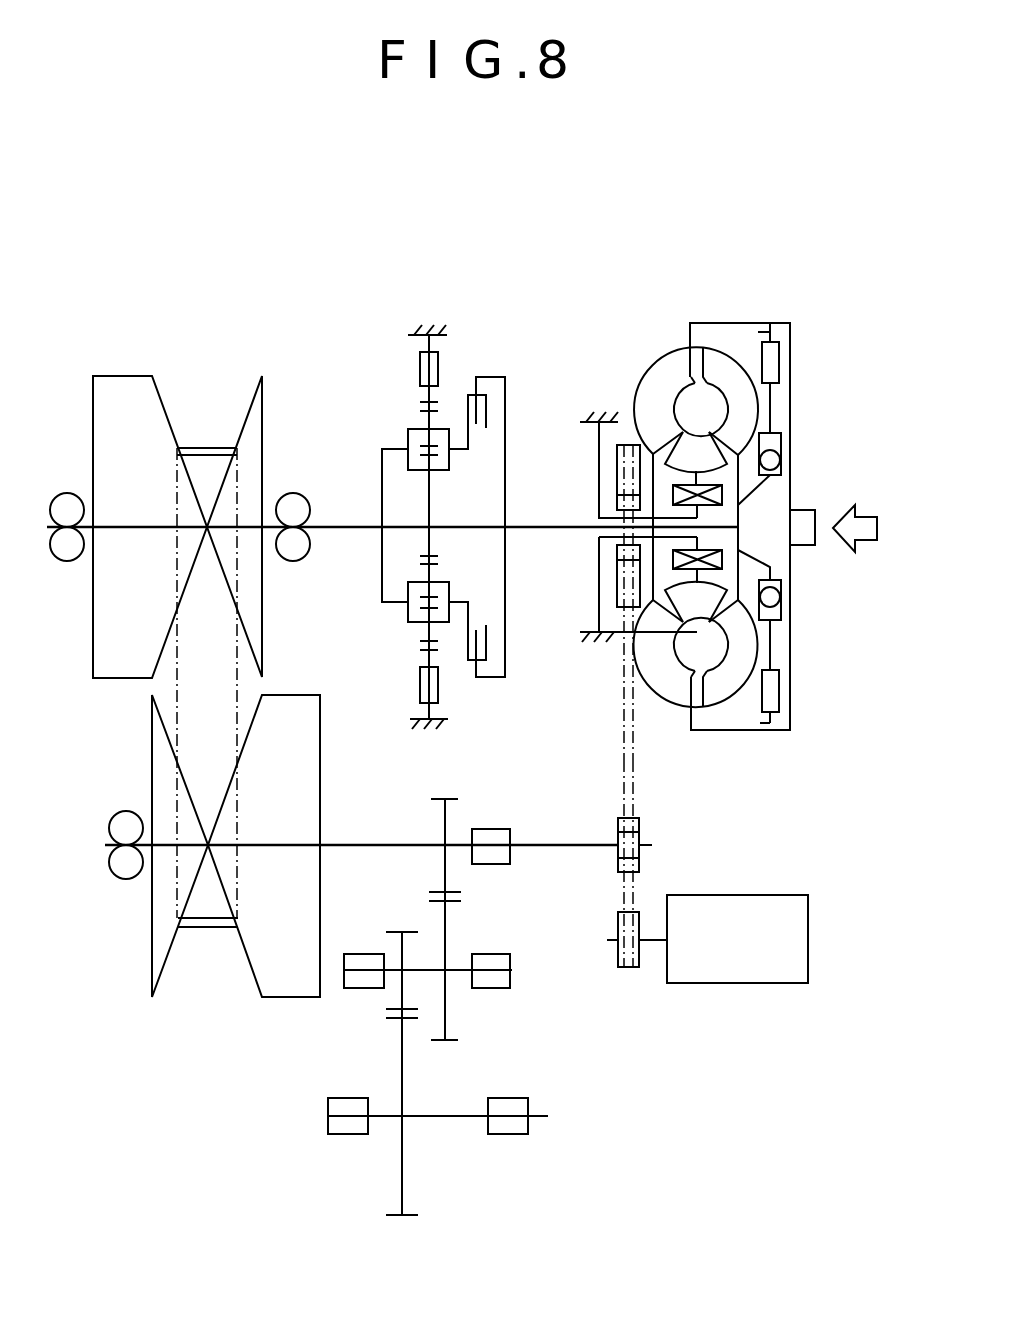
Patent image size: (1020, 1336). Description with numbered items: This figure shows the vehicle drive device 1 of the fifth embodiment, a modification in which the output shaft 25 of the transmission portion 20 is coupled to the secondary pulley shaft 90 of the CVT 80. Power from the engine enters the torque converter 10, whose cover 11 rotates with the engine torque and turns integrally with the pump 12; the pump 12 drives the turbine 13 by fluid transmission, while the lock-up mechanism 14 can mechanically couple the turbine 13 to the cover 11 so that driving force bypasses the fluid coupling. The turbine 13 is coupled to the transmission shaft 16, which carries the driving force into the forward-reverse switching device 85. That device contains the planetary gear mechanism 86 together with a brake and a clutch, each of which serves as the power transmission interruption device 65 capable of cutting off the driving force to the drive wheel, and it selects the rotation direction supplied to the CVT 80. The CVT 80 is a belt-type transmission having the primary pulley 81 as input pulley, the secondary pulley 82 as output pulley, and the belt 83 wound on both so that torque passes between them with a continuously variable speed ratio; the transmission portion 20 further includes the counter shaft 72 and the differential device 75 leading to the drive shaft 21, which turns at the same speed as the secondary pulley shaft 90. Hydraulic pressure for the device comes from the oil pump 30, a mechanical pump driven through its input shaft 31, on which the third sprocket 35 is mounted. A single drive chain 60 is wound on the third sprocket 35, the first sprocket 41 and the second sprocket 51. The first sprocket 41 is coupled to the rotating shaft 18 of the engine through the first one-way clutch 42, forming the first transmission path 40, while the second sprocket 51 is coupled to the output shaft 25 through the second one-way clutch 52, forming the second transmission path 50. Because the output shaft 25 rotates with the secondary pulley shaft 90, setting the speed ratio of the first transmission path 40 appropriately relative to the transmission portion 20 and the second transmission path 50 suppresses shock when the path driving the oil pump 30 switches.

The vehicle drive device 1 is at (310, 237).
The torque converter 10 is at (687, 262).
The cover 11 is at (773, 320).
The pump 12 is at (664, 344).
The turbine 13 is at (730, 342).
The lock-up mechanism 14 is at (779, 362).
The transmission shaft 16 is at (540, 531).
The rotating shaft of the engine 18 is at (650, 445).
The transmission portion 20 is at (268, 1110).
The drive shaft 21 is at (382, 1110).
The output shaft of the transmission portion 25 is at (542, 842).
The oil pump 30 is at (738, 985).
The input shaft 31 is at (652, 942).
The third sprocket 35 is at (618, 958).
The first transmission path 40 is at (618, 728).
The first sprocket 41 is at (615, 463).
The first one-way clutch 42 is at (615, 500).
The second transmission path 50 is at (605, 900).
The second sprocket 51 is at (640, 825).
The second one-way clutch 52 is at (640, 837).
The drive chain 60 is at (622, 808).
The power transmission interruption device 65 is at (480, 293).
The counter shaft 72 is at (425, 966).
The differential device 75 is at (370, 1165).
The CVT 80 is at (170, 322).
The primary pulley 81 is at (250, 410).
The secondary pulley 82 is at (168, 968).
The belt 83 is at (237, 648).
The forward-reverse switching device 85 is at (392, 348).
The planetary gear mechanism 86 is at (395, 420).
The secondary pulley shaft 90 is at (377, 844).